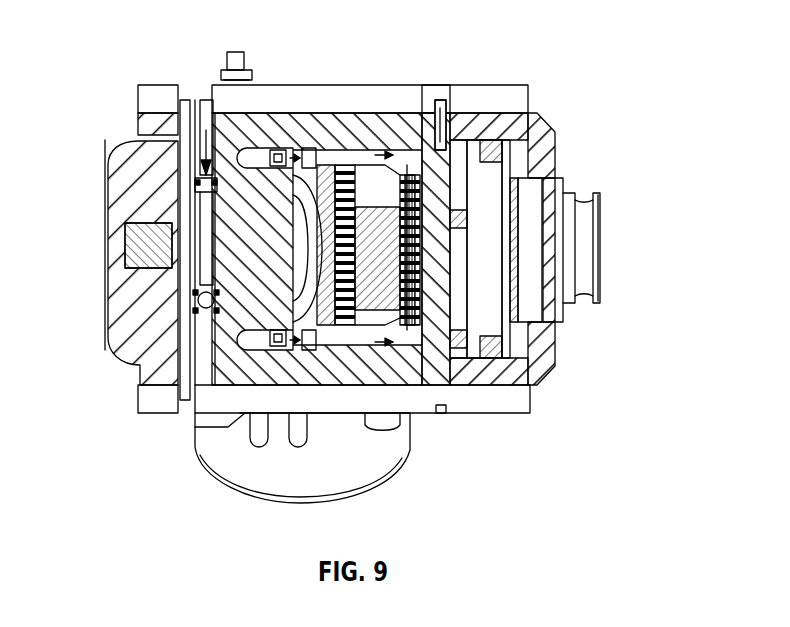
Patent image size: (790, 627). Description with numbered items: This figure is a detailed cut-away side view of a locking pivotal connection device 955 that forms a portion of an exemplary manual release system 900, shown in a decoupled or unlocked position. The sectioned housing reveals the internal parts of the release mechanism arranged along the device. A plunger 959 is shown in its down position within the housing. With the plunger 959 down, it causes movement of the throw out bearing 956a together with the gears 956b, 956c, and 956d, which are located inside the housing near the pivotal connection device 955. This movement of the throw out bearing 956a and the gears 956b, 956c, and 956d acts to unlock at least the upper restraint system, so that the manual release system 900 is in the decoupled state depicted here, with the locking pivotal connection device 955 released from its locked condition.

The manual release system 900 is at (136, 48).
The plunger 959 is at (206, 130).
The throw out bearing 956a is at (405, 372).
The gear 956b is at (300, 152).
The gear 956c is at (335, 148).
The gear 956d is at (397, 158).
The locking pivotal connection device 955 is at (606, 277).